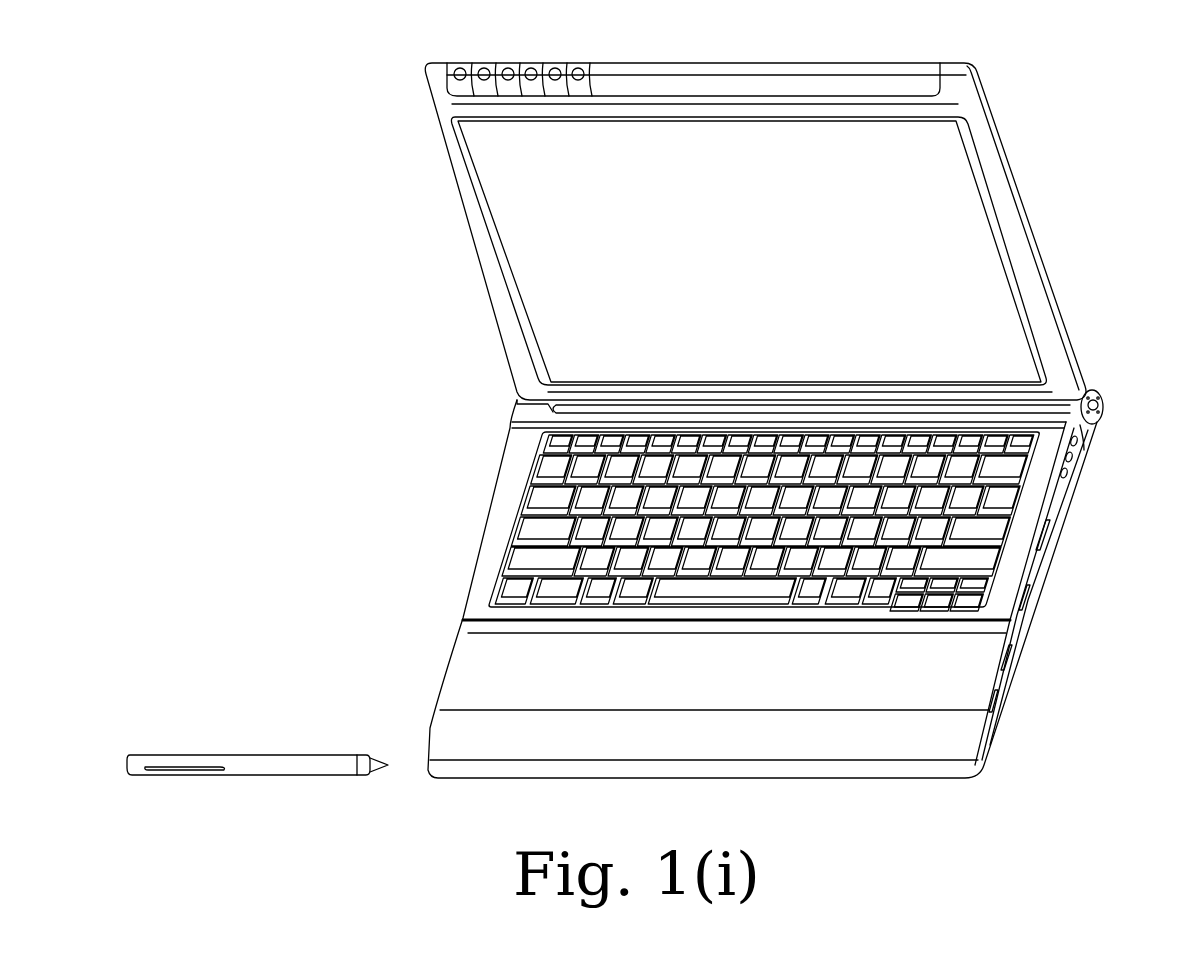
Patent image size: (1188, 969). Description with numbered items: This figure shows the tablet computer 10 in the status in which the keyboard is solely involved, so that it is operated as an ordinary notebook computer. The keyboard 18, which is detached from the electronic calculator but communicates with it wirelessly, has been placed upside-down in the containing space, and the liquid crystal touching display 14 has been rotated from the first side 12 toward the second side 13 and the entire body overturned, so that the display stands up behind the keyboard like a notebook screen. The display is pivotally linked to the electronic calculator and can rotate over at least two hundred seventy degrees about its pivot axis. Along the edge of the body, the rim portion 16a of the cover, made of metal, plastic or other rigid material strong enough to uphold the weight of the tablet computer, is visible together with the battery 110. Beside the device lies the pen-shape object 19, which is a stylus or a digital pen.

The tablet computer 10 is at (302, 344).
The first side 12 is at (974, 132).
The liquid crystal touching display 14 is at (957, 290).
The second side 13 is at (965, 673).
The rim portion 16a is at (1015, 566).
The keyboard 18 is at (535, 553).
The pen-shape object 19 is at (283, 768).
The battery 110 is at (1104, 407).